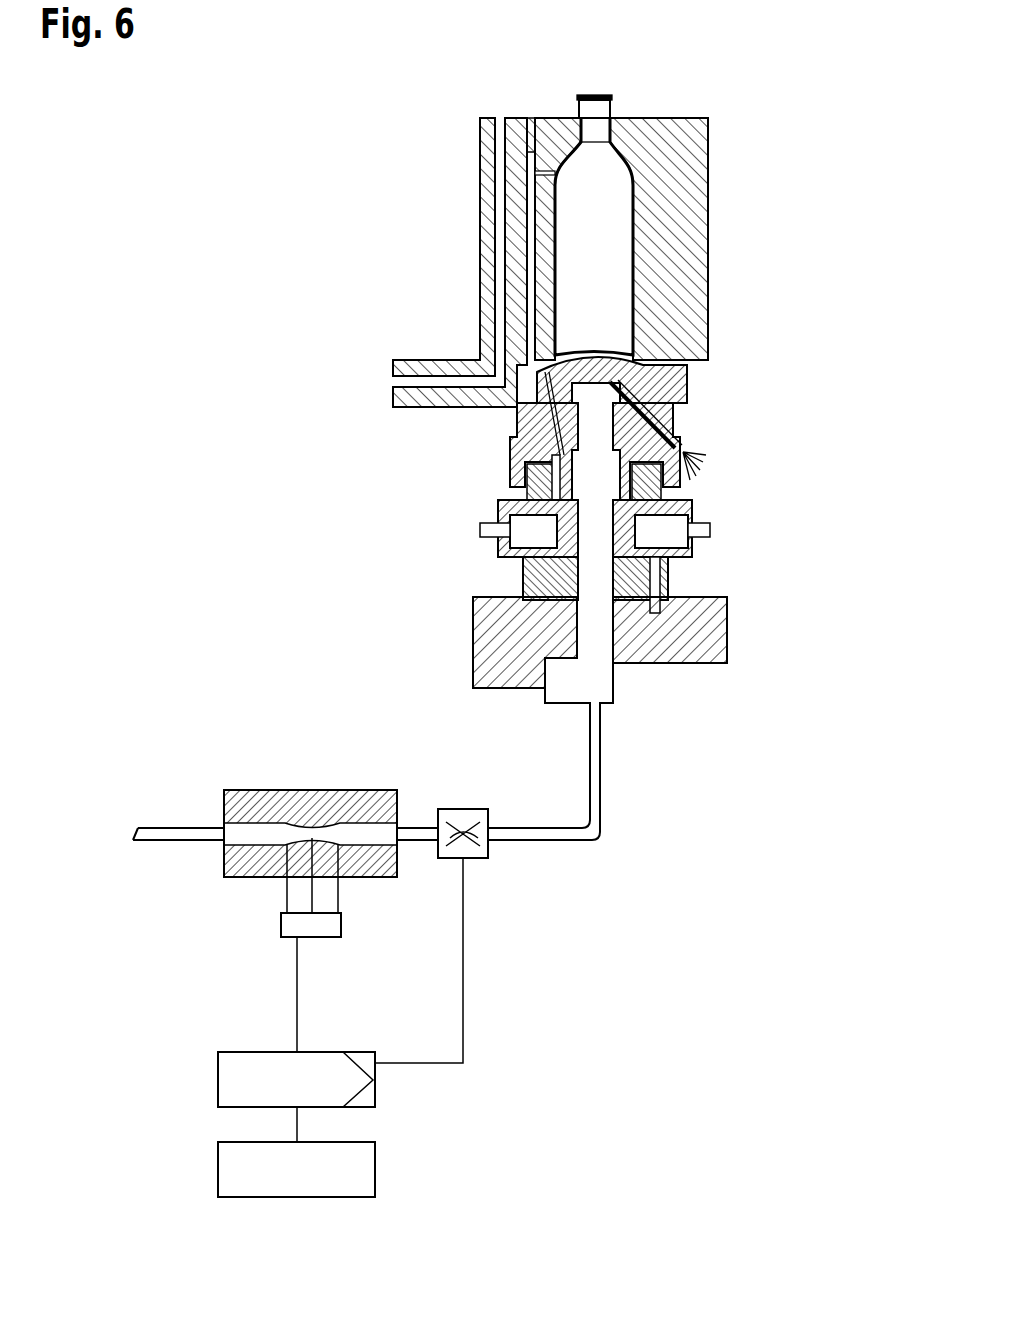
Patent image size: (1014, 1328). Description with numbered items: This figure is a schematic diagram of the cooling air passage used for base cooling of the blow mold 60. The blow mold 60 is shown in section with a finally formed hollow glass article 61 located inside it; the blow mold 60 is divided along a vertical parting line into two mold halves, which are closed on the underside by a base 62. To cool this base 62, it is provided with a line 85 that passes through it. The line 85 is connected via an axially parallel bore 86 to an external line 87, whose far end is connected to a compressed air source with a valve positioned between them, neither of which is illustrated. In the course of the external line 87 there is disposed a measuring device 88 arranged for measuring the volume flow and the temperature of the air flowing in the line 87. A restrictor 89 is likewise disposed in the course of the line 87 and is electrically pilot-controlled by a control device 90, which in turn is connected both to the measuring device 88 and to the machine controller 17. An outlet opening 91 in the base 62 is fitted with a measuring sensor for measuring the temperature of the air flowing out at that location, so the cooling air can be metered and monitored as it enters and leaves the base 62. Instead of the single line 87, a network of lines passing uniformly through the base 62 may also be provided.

The machine controller 17 is at (375, 1165).
The blow mold 60 is at (688, 219).
The hollow glass article 61 is at (593, 112).
The base 62 is at (655, 382).
The line 85 is at (673, 422).
The axially parallel bore 86 is at (598, 540).
The external line 87 is at (157, 830).
The measuring device 88 is at (312, 812).
The restrictor 89 is at (450, 815).
The control device 90 is at (375, 1095).
The outlet opening 91 is at (683, 452).